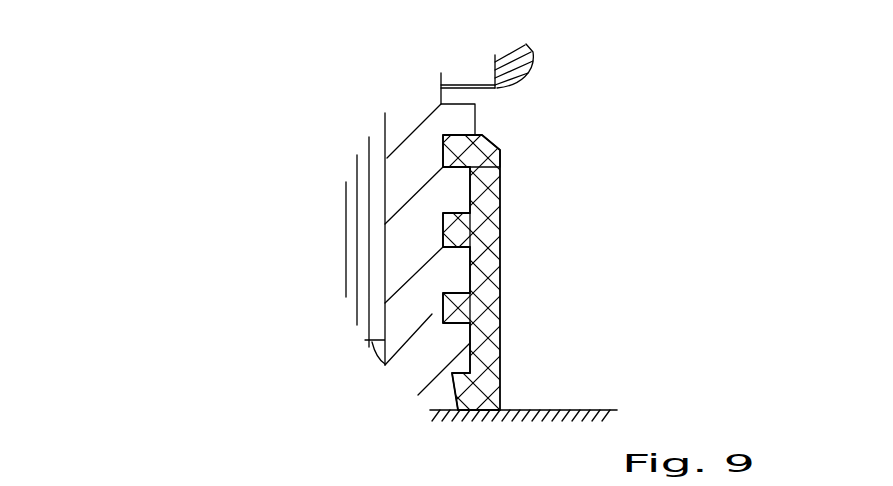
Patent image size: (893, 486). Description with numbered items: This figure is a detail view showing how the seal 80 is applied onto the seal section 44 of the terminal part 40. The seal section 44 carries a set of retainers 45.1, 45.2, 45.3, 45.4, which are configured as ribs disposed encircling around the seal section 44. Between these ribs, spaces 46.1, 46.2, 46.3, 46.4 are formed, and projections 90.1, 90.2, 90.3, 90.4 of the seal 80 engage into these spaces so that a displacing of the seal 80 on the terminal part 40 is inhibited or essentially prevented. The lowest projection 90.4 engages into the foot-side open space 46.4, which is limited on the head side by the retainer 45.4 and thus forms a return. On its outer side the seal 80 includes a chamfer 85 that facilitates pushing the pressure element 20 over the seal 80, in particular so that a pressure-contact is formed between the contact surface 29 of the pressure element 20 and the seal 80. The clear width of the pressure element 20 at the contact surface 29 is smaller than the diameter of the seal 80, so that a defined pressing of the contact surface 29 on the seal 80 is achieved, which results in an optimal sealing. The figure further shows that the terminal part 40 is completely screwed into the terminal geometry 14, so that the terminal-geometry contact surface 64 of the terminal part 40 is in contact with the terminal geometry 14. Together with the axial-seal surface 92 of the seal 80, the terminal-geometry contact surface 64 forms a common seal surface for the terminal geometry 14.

The terminal geometry 14 is at (613, 410).
The pressure element 20 is at (545, 71).
The contact surface 29 is at (493, 63).
The terminal part 40 is at (492, 115).
The seal section 44 is at (385, 308).
The retainer 45.1 is at (455, 120).
The retainer 45.2 is at (450, 192).
The retainer 45.3 is at (455, 265).
The retainer 45.4 is at (453, 350).
The space 46.1 is at (432, 150).
The space 46.2 is at (432, 229).
The space 46.3 is at (432, 315).
The foot-side open space 46.4 is at (440, 380).
The terminal-geometry contact surface 64 is at (430, 410).
The seal 80 is at (440, 398).
The chamfer 85 is at (497, 143).
The projection 90.1 is at (457, 153).
The projection 90.2 is at (458, 225).
The projection 90.3 is at (465, 308).
The projection 90.4 is at (455, 378).
The axial-seal surface 92 is at (480, 410).